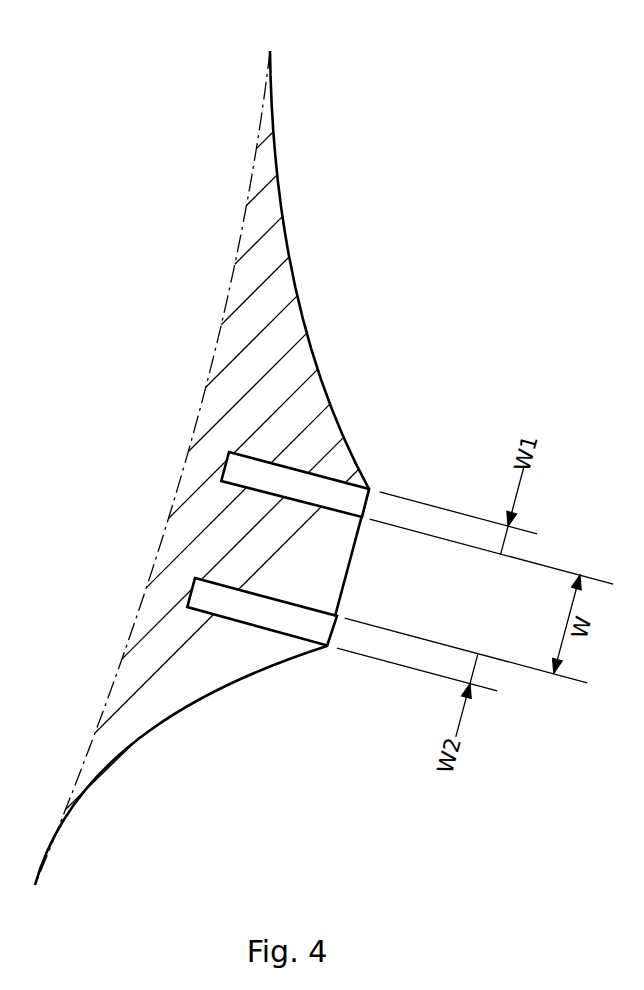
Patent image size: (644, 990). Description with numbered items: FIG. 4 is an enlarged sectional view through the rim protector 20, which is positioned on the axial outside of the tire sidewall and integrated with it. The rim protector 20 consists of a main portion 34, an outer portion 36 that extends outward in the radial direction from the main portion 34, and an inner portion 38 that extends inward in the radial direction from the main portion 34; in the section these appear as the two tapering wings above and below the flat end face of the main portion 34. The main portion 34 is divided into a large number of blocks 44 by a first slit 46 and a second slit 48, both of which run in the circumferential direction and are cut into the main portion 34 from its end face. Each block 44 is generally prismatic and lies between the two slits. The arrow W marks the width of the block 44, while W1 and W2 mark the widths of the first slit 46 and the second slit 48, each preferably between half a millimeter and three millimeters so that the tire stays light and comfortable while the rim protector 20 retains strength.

The rim protector 20 is at (570, 44).
The main portion 34 is at (358, 572).
The outer portion 36 is at (298, 366).
The inner portion 38 is at (228, 668).
The block 44 is at (263, 543).
The first slit 46 is at (280, 467).
The second slit 48 is at (266, 598).